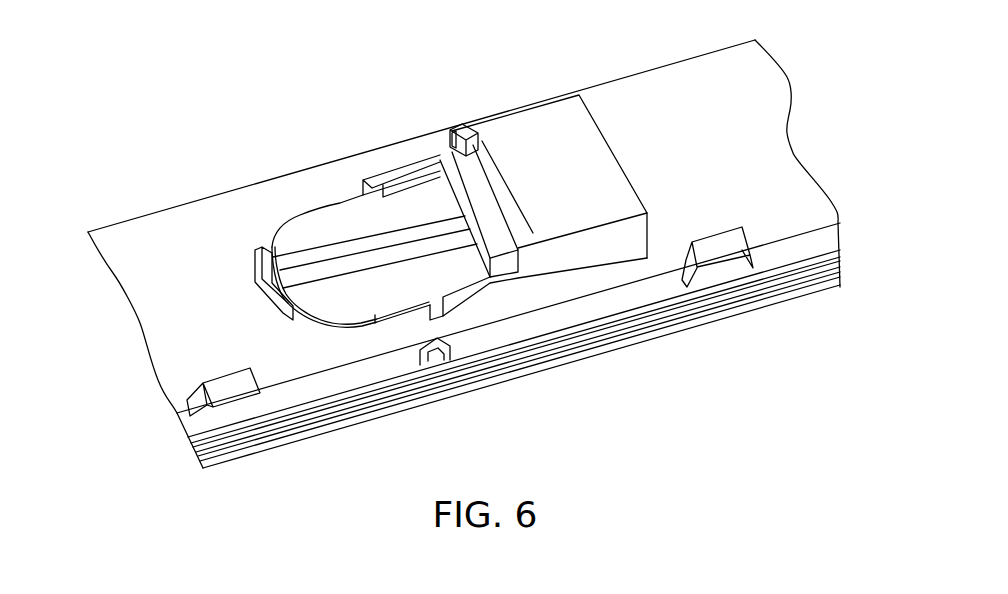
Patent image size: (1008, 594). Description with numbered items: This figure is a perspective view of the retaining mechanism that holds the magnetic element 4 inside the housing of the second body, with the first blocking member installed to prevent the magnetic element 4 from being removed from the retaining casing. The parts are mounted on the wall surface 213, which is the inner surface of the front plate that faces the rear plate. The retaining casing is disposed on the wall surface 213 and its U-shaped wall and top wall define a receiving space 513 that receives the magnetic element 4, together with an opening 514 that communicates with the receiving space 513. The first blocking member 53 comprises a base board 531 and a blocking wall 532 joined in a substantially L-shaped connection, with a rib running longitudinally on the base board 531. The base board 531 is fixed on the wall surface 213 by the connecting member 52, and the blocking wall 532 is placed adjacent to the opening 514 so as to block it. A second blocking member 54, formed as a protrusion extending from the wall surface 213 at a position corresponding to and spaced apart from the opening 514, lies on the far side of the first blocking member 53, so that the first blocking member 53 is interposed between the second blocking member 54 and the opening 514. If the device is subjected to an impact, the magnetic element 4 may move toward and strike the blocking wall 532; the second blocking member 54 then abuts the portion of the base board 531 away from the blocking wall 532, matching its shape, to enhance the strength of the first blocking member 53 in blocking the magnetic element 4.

The wall surface 213 is at (750, 90).
The connecting member 52 is at (333, 327).
The first blocking member 53 is at (357, 193).
The base board 531 is at (340, 203).
The blocking wall 532 is at (447, 163).
The magnetic element 4 is at (490, 170).
The receiving space 513 is at (463, 132).
The opening 514 is at (452, 128).
The second blocking member 54 is at (255, 287).